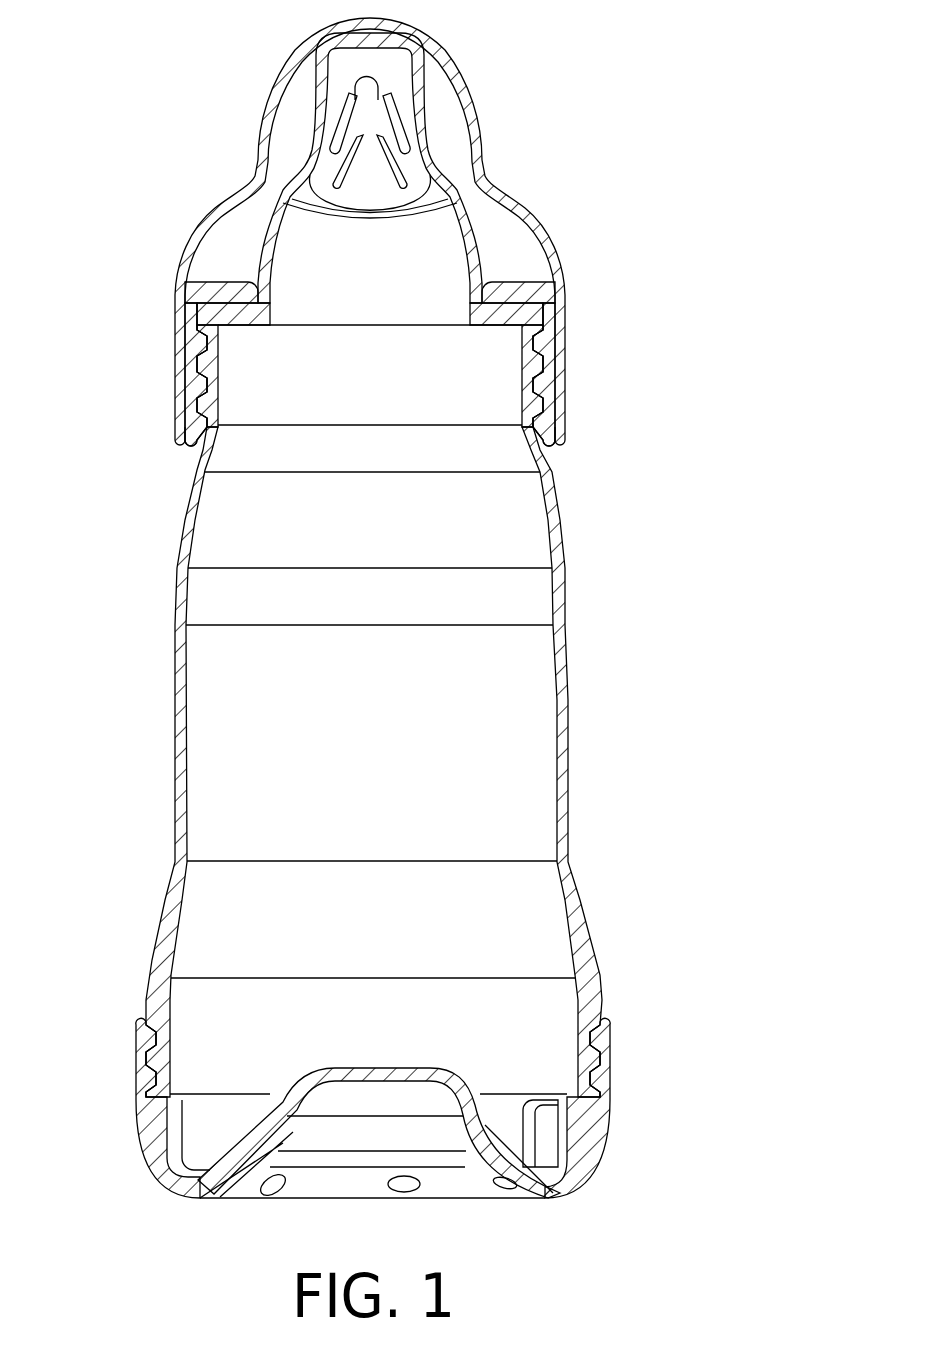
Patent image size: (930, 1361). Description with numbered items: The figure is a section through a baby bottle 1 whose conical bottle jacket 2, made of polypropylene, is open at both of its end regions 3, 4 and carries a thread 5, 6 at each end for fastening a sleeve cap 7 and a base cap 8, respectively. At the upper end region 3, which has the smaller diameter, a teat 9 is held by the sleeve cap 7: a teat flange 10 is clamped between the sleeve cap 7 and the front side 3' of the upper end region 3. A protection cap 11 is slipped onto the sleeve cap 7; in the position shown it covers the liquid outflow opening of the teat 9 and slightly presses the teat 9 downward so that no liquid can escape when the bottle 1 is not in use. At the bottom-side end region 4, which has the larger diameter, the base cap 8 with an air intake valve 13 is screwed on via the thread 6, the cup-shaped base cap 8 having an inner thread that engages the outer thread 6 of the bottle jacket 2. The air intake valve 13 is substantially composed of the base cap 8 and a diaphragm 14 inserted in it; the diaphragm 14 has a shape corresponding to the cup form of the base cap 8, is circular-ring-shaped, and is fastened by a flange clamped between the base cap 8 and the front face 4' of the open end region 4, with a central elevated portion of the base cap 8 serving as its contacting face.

The baby bottle 1 is at (605, 534).
The bottle jacket 2 is at (568, 708).
The upper end region 3 is at (424, 230).
The front side of the upper end region 3' is at (423, 343).
The bottom-side end region 4 is at (378, 1097).
The front face of the open end region 4' is at (107, 1066).
The thread 5 is at (542, 348).
The thread 6 is at (600, 1065).
The sleeve cap 7 is at (557, 423).
The base cap 8 is at (596, 1142).
The teat 9 is at (420, 110).
The teat flange 10 is at (521, 298).
The protection cap 11 is at (437, 55).
The air intake valve 13 is at (222, 1129).
The diaphragm 14 is at (537, 1182).